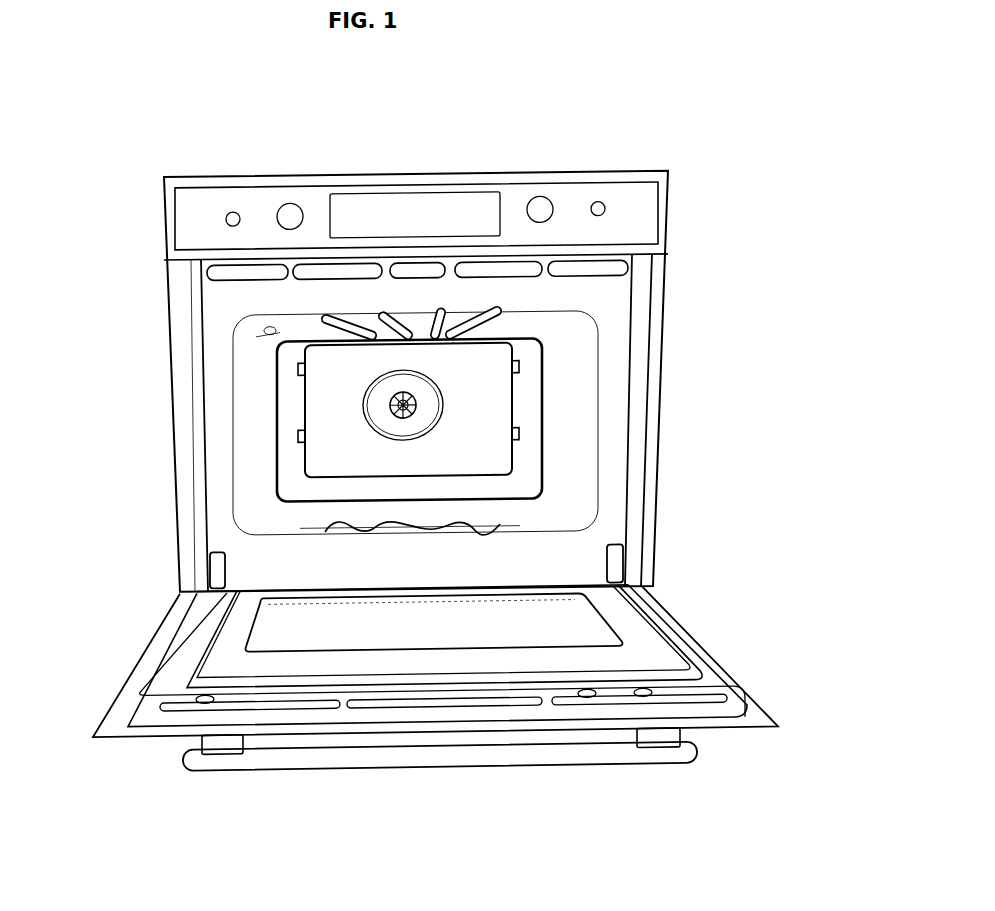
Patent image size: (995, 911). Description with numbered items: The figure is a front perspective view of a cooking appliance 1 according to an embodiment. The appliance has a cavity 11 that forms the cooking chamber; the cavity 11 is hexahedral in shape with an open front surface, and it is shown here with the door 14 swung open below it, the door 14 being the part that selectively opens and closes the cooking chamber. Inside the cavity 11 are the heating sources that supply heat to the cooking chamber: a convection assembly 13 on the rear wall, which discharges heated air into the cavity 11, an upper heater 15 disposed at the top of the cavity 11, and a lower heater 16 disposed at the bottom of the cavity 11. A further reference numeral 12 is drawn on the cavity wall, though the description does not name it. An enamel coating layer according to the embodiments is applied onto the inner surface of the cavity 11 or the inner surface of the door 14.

The cooking appliance 1 is at (113, 150).
The cavity 11 is at (243, 342).
The lamp 12 is at (268, 326).
The convection assembly 13 is at (358, 410).
The door 14 is at (134, 662).
The upper heater 15 is at (597, 321).
The lower heater 16 is at (607, 520).